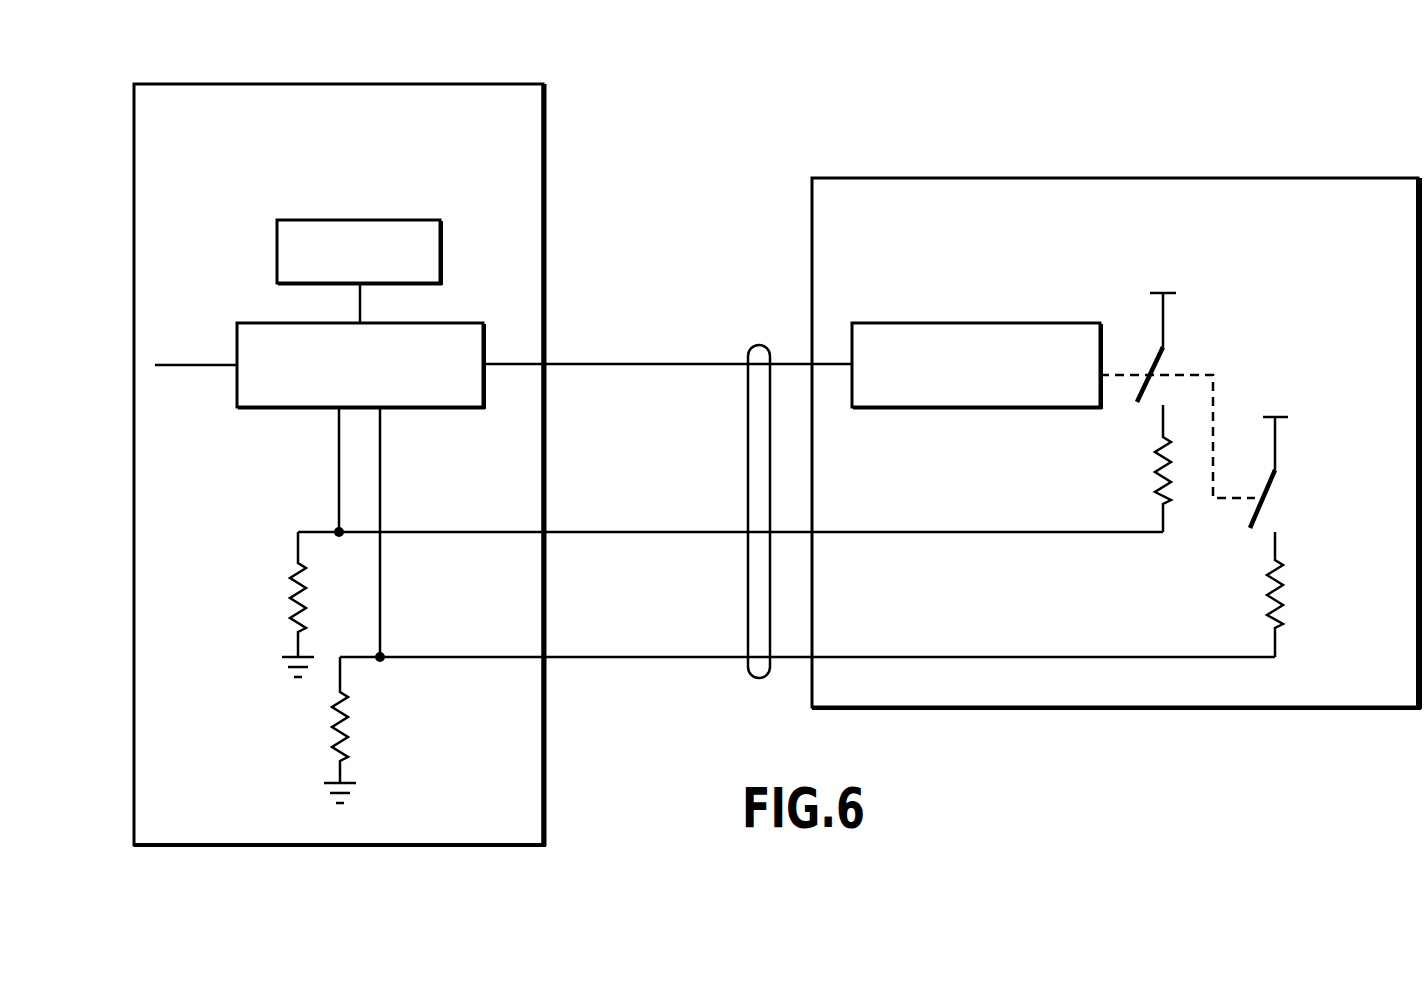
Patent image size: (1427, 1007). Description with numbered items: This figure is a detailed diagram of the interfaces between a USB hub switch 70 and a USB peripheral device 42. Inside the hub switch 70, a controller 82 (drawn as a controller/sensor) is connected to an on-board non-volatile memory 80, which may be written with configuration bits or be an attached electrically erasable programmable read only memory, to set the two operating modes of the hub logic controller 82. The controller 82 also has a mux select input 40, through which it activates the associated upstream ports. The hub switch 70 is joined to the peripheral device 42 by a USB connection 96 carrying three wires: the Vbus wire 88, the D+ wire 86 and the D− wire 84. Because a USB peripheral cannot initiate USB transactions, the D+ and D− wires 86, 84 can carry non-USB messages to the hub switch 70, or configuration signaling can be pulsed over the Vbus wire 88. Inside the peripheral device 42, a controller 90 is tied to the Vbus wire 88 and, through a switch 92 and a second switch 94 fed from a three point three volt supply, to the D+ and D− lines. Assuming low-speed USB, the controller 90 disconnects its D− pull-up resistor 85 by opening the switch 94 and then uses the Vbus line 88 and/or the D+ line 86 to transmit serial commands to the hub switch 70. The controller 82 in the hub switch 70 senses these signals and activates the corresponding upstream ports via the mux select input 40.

The USB hub switch 70 is at (338, 82).
The non-volatile memory 80 is at (359, 218).
The controller 82 is at (276, 410).
The mux select input 40 is at (197, 363).
The Vbus wire 88 is at (597, 362).
The D+ USB wire 86 is at (597, 530).
The D− USB wire 84 is at (597, 655).
The USB connection 96 is at (758, 343).
The peripheral device 42 is at (1121, 176).
The controller 90 is at (989, 321).
The switch 92 is at (1158, 362).
The switch 94 is at (1270, 495).
The D− pull-up resistor 85 is at (1266, 591).